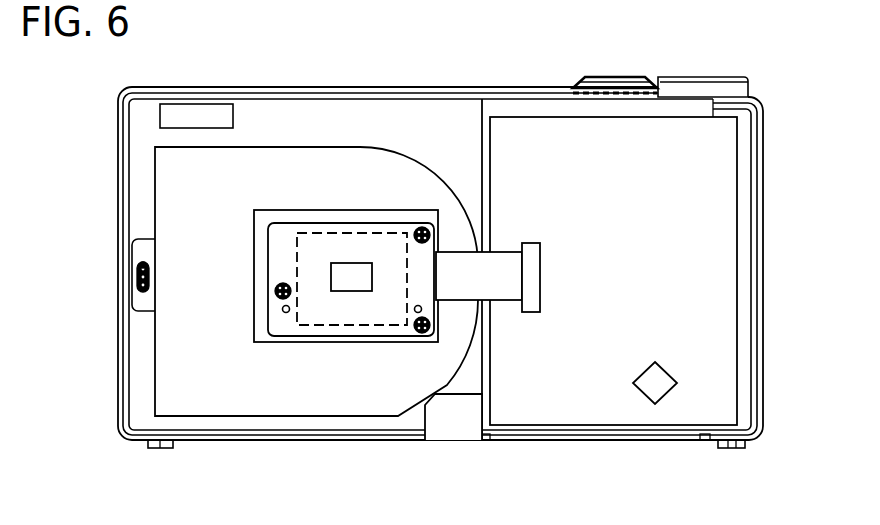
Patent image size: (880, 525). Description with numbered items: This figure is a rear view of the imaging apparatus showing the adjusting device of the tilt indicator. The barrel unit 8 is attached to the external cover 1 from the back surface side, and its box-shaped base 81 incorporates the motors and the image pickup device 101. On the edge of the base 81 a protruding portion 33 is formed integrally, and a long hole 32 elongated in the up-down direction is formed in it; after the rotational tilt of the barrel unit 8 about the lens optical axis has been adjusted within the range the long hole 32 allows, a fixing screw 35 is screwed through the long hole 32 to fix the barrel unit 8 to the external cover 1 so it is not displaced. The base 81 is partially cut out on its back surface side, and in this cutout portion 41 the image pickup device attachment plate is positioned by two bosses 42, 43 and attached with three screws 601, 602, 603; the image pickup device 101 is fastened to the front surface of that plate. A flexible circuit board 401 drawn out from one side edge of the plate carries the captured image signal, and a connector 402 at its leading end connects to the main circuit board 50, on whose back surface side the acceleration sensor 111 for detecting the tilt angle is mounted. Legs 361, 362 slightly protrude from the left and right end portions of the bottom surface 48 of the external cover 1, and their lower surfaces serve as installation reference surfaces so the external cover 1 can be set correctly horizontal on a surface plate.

The external cover 1 is at (421, 87).
The barrel unit 8 is at (141, 169).
The long hole 32 is at (141, 262).
The protruding portion 33 is at (137, 298).
The fixing screw 35 is at (140, 272).
The cutout portion 41 is at (303, 214).
The boss 42 is at (421, 306).
The boss 43 is at (282, 310).
The bottom surface 48 is at (357, 441).
The main circuit board 50 is at (733, 272).
The base 81 is at (293, 417).
The image pickup device 101 is at (337, 320).
The acceleration sensor 111 is at (655, 405).
The leg 361 is at (161, 449).
The leg 362 is at (732, 449).
The flexible circuit board 401 is at (508, 258).
The connector 402 is at (541, 277).
The screw 601 is at (420, 227).
The screw 602 is at (417, 333).
The screw 603 is at (275, 291).